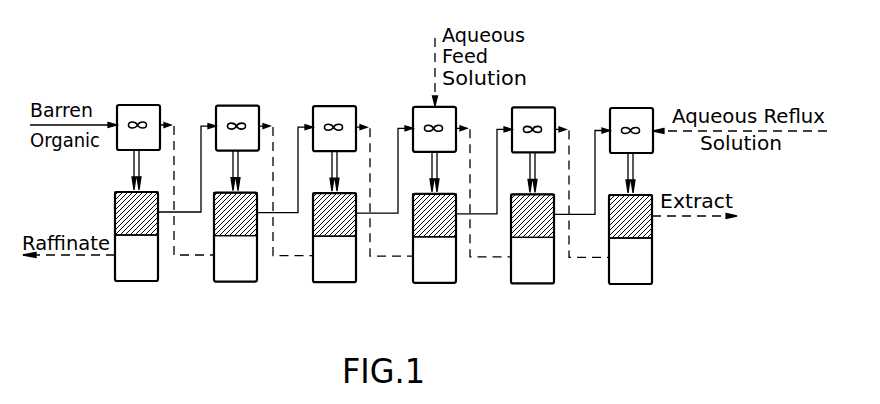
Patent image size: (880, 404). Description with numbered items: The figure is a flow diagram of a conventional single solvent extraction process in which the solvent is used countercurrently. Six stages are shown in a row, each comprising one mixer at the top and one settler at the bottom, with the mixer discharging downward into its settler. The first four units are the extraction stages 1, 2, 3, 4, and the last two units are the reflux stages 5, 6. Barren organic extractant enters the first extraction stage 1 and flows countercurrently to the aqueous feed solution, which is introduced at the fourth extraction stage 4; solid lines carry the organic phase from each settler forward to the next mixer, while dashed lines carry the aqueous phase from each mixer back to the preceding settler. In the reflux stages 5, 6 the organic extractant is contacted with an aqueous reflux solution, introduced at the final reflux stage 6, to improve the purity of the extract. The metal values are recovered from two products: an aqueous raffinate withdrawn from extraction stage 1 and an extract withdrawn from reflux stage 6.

The extraction stage 1 is at (137, 209).
The extraction stage 2 is at (236, 209).
The extraction stage 3 is at (334, 209).
The extraction stage 4 is at (434, 210).
The reflux stage 5 is at (533, 210).
The reflux stage 6 is at (631, 210).